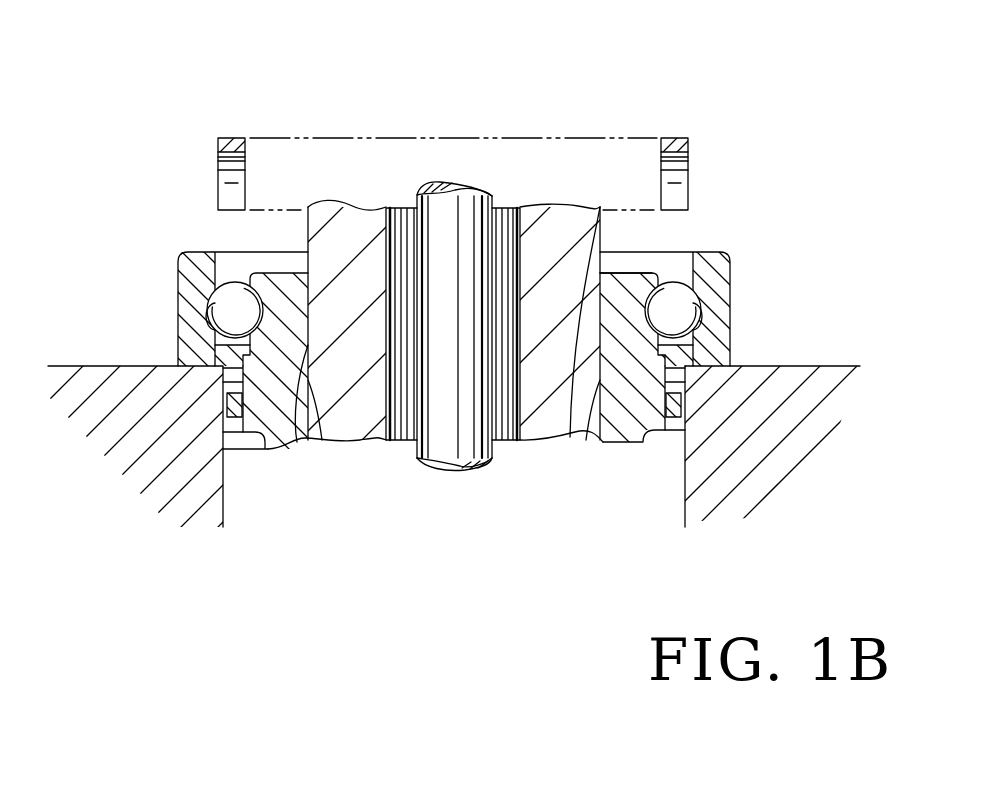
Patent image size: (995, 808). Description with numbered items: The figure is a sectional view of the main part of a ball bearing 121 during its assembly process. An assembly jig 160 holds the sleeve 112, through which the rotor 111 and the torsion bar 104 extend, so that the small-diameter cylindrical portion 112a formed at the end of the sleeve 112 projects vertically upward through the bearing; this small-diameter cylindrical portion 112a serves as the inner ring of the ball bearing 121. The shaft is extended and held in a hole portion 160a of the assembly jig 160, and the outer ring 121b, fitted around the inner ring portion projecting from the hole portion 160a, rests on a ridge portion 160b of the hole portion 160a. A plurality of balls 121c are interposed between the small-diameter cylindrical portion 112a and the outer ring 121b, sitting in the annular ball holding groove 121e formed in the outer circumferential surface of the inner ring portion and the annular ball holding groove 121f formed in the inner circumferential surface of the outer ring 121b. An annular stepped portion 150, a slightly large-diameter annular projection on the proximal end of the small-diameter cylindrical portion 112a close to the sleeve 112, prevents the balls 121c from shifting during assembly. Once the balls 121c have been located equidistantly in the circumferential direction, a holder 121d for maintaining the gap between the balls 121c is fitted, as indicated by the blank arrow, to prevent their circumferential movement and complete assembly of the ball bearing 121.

The torsion bar 104 is at (444, 445).
The rotor 111 is at (548, 420).
The sleeve 112 is at (633, 413).
The small-diameter cylindrical portion 112a is at (630, 283).
The ball bearing 121 is at (728, 236).
The outer ring 121b is at (710, 263).
The balls 121c is at (687, 298).
The holder 121d is at (232, 137).
The annular ball holding groove 121e is at (243, 296).
The annular ball holding groove 121f is at (203, 303).
The annular stepped portion 150 is at (210, 360).
The assembly jig 160 is at (777, 440).
The hole portion 160a is at (683, 470).
The ridge portion 160b is at (169, 366).